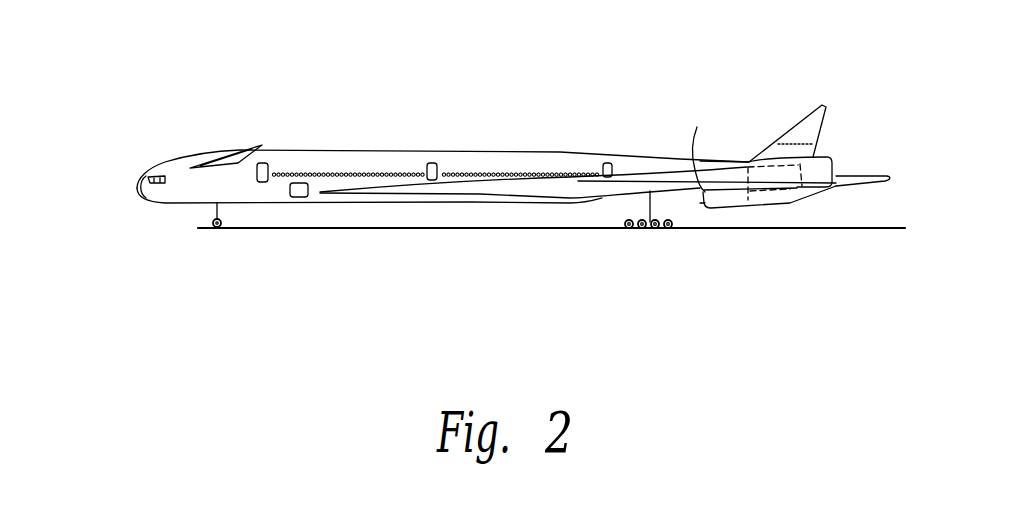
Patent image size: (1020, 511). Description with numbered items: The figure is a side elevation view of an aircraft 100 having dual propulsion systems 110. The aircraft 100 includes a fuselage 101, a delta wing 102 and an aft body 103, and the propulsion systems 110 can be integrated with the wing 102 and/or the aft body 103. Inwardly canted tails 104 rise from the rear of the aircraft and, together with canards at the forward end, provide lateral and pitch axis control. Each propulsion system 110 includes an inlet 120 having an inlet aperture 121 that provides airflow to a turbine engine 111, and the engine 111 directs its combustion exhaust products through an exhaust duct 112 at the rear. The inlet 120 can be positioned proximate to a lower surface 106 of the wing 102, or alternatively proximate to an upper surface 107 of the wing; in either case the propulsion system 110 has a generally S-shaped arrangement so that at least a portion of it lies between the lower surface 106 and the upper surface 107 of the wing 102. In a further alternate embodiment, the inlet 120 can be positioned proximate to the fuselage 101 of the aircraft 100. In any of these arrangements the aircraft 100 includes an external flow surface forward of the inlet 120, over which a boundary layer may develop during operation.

The aircraft 100 is at (172, 143).
The fuselage 101 is at (461, 149).
The delta wing 102 is at (493, 183).
The aft body 103 is at (746, 160).
The inwardly canted tails 104 is at (808, 112).
The lower surface 106 is at (625, 195).
The upper surface 107 is at (556, 170).
The propulsion system 110 is at (732, 211).
The turbine engine 111 is at (785, 198).
The exhaust duct 112 is at (822, 160).
The inlet 120 is at (701, 201).
The inlet aperture 121 is at (691, 146).